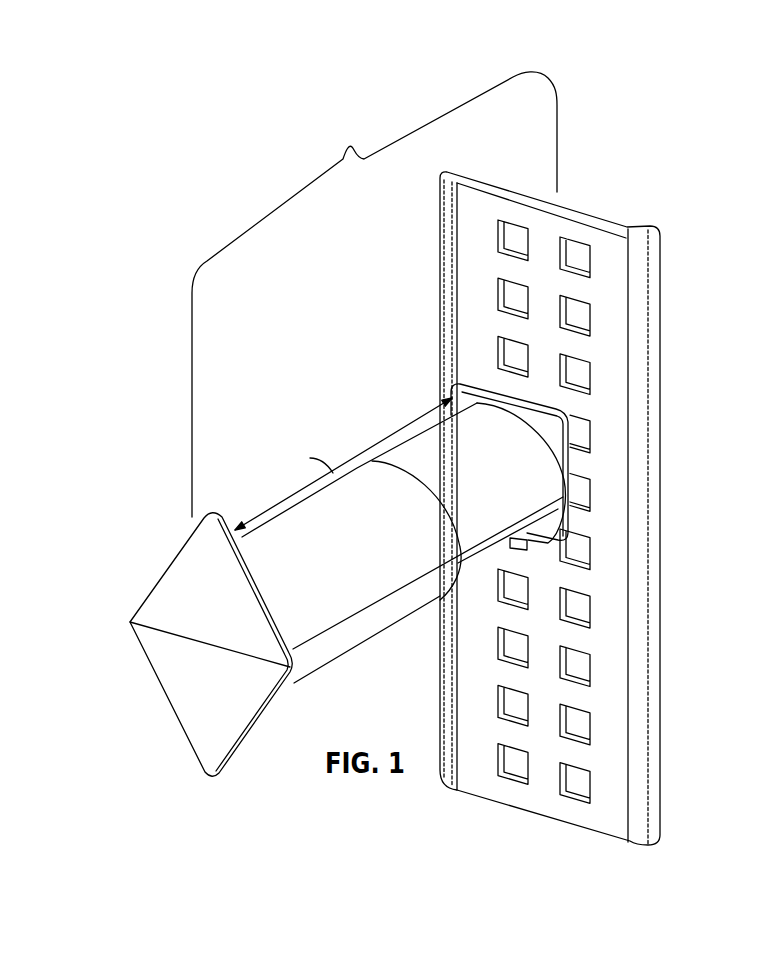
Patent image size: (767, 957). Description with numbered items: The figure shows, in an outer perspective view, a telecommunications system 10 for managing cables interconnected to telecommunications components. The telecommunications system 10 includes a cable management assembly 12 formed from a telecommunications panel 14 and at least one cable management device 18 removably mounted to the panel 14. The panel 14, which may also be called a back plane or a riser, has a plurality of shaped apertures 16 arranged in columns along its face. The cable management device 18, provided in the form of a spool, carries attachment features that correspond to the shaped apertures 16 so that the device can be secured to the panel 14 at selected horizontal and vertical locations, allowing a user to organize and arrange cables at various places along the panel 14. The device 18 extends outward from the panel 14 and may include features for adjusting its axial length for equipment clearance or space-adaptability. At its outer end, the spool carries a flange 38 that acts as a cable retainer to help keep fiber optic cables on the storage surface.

The telecommunications system 10 is at (428, 486).
The cable management assembly 12 is at (374, 294).
The telecommunications panel 14 is at (583, 536).
The shaped apertures 16 is at (583, 783).
The cable management device 18 is at (362, 655).
The flange 38 is at (173, 556).